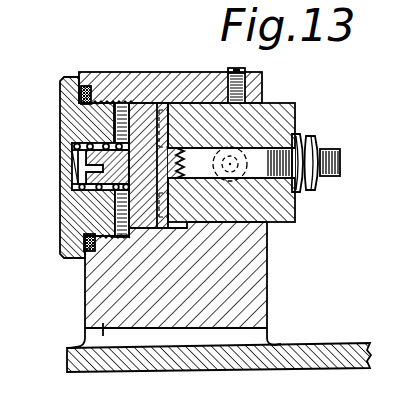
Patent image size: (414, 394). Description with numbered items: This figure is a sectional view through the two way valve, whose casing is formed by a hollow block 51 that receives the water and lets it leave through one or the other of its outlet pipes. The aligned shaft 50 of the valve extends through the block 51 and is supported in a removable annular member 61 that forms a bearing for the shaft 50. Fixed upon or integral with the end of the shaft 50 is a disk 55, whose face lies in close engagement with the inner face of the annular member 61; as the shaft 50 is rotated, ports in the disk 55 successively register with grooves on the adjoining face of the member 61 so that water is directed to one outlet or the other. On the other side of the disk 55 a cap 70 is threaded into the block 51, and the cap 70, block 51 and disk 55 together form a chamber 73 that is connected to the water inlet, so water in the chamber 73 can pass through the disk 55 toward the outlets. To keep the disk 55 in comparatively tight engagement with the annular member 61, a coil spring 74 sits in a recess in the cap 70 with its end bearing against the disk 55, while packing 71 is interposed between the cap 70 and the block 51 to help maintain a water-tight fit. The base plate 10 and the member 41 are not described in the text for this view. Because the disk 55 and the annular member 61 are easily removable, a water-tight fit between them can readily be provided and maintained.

The base plate 10 is at (337, 345).
The support member 41 is at (283, 387).
The shaft 50 is at (332, 146).
The hollow block 51 is at (260, 274).
The disk 55 is at (134, 226).
The annular member 61 is at (284, 118).
The cap 70 is at (62, 125).
The packing 71 is at (84, 87).
The chamber 73 is at (122, 102).
The coil spring 74 is at (85, 184).